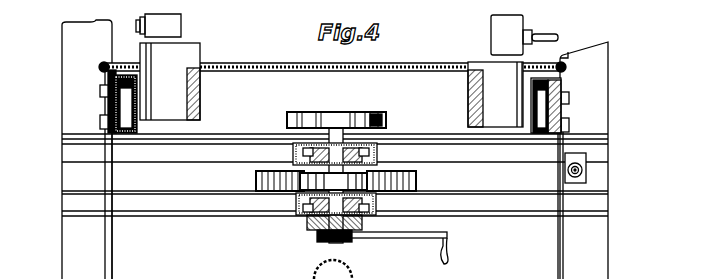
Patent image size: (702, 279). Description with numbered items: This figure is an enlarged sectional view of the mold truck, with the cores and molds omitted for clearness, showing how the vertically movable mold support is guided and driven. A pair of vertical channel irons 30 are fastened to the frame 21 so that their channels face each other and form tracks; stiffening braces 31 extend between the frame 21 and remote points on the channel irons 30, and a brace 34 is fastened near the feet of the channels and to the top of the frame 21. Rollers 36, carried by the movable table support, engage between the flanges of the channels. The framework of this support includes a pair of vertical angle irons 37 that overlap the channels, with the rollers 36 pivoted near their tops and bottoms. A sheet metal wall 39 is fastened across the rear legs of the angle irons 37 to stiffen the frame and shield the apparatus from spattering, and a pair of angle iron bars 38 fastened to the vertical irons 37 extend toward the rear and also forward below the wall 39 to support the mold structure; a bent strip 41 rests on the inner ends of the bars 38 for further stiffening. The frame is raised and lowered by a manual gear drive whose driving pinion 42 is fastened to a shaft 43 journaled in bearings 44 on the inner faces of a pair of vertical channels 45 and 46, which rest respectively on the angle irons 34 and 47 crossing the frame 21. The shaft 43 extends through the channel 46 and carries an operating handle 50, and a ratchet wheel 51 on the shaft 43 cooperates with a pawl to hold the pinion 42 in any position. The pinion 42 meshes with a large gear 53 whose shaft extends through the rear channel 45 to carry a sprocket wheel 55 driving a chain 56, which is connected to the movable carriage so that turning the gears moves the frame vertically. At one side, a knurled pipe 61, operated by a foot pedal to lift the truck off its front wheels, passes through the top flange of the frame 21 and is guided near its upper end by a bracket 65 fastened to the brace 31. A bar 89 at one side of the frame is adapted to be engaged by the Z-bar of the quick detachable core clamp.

The frame 21 is at (62, 94).
The vertical channel iron 30 is at (108, 73).
The stiffening brace 31 is at (103, 257).
The brace 34 is at (216, 134).
The roller 36 is at (104, 138).
The vertical angle iron 37 is at (143, 100).
The bar 38 is at (183, 33).
The sheet metal wall 39 is at (210, 63).
The bent strip 41 is at (200, 100).
The driving pinion 42 is at (296, 178).
The shaft 43 is at (375, 199).
The bearing 44 is at (377, 155).
The vertical channel 45 is at (296, 156).
The vertical channel 46 is at (296, 200).
The angle iron 47 is at (152, 208).
The operating handle 50 is at (396, 239).
The ratchet wheel 51 is at (448, 236).
The large gear 53 is at (256, 196).
The sprocket wheel 55 is at (372, 122).
The chain 56 is at (290, 118).
The pipe 61 is at (583, 172).
The bracket 65 is at (586, 185).
The bar 89 is at (140, 28).